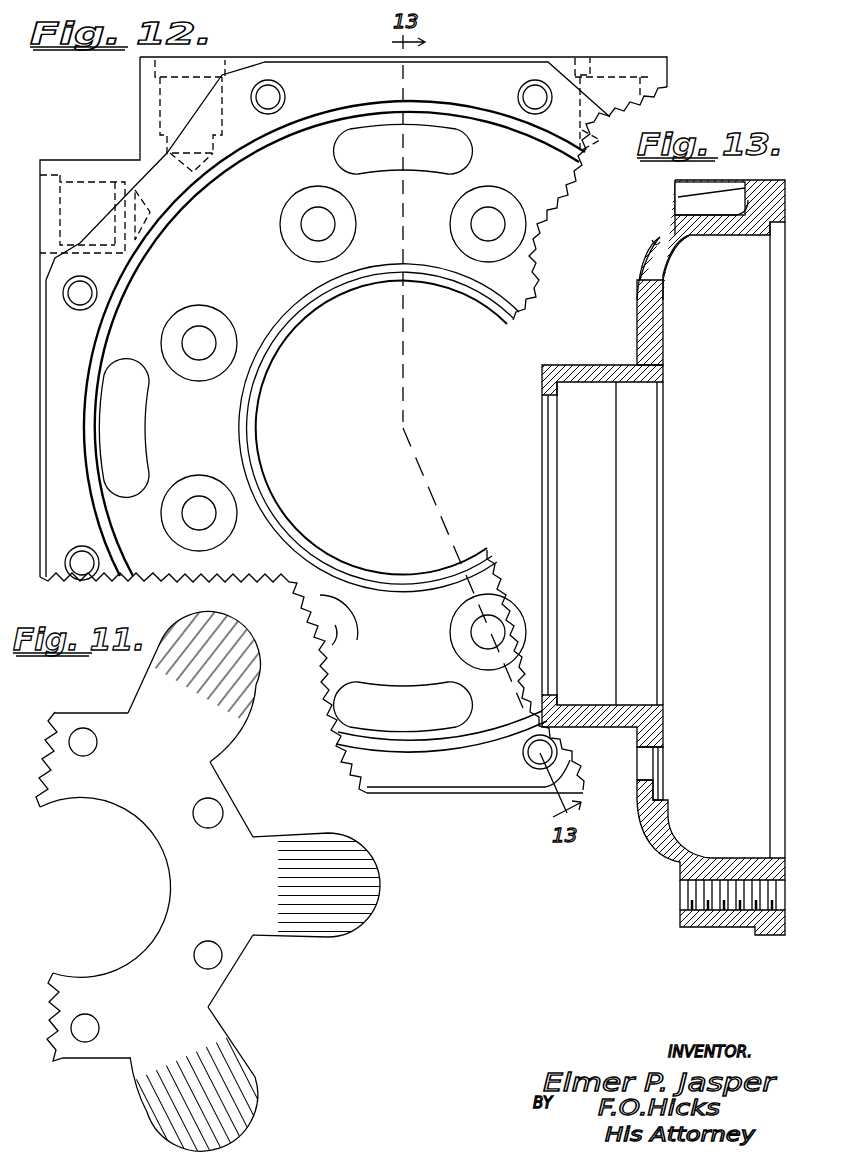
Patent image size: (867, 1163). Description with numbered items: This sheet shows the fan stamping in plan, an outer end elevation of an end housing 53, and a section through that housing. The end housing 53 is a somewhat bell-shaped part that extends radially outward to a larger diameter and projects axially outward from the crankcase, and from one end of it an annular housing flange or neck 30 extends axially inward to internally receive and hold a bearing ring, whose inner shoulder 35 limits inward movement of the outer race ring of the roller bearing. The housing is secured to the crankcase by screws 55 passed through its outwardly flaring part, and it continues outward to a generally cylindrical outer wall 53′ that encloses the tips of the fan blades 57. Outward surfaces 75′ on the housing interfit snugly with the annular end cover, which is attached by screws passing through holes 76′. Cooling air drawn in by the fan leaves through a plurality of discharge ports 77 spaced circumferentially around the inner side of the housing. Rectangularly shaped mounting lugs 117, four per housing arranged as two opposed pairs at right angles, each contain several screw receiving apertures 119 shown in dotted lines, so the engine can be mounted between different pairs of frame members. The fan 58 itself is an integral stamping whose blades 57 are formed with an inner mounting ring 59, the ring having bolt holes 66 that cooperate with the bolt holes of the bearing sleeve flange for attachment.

In FIG. 12, the mounting lug 117 is at (148, 75).
In FIG. 13, the mounting lug 117 is at (690, 192).
In FIG. 12, the screw receiving aperture 119 is at (228, 56).
In FIG. 12, the hole 76′ is at (534, 96).
In FIG. 13, the hole 76′ is at (680, 882).
In FIG. 12, the discharge port 77 is at (344, 136).
In FIG. 13, the discharge port 77 is at (657, 243).
In FIG. 12, the screw 55 is at (503, 228).
In FIG. 13, the screw 55 is at (658, 752).
In FIG. 13, the outward surface 75′ is at (768, 237).
In FIG. 13, the cylindrical outer wall 53′ is at (745, 238).
In FIG. 13, the end housing 53 is at (646, 316).
In FIG. 13, the annular housing flange 30 is at (588, 368).
In FIG. 13, the inner shoulder 35 is at (552, 396).
In FIG. 11, the fan blade 57 is at (164, 678).
In FIG. 11, the fan 58 is at (295, 824).
In FIG. 11, the inner mounting ring 59 is at (206, 984).
In FIG. 11, the bolt hole 66 is at (222, 954).